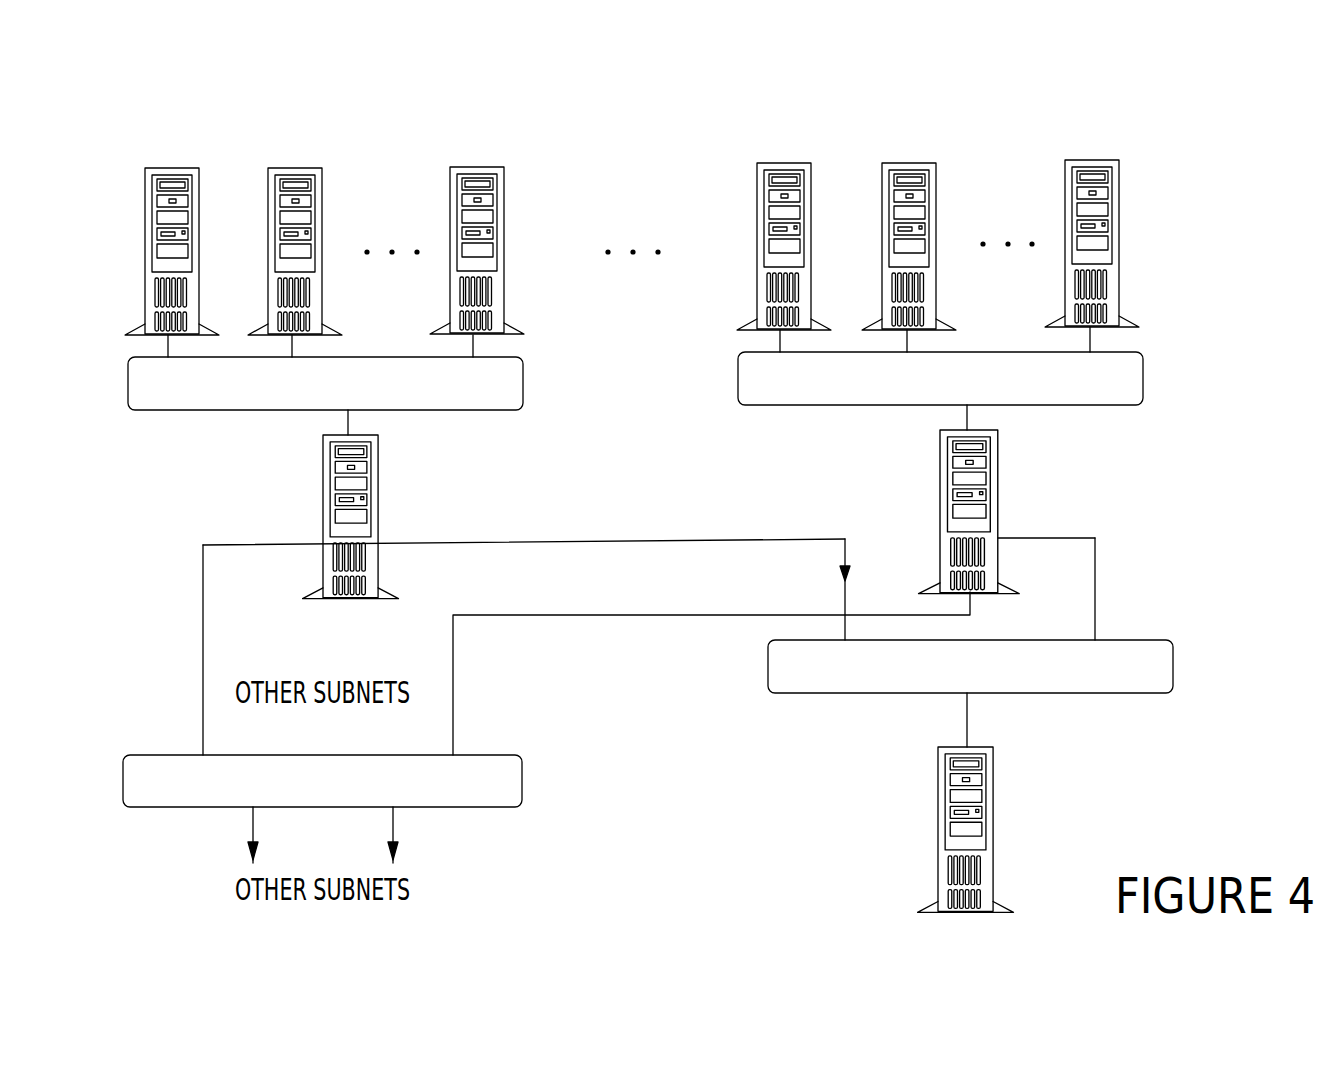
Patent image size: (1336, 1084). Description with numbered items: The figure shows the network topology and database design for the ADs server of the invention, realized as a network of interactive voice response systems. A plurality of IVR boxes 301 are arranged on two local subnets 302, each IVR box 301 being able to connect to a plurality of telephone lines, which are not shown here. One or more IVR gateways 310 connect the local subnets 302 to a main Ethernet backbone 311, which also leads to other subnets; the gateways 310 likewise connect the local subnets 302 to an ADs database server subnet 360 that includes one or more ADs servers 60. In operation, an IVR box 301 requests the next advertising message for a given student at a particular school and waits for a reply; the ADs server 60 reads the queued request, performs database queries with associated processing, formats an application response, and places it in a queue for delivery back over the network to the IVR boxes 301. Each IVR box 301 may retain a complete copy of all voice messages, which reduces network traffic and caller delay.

The IVR box 301 is at (175, 168).
The local subnet 302 is at (497, 410).
The IVR gateway 310 is at (323, 477).
The main Ethernet backbone 311 is at (492, 807).
The ADs database server subnet 360 is at (1145, 693).
The ADs server 60 is at (884, 872).